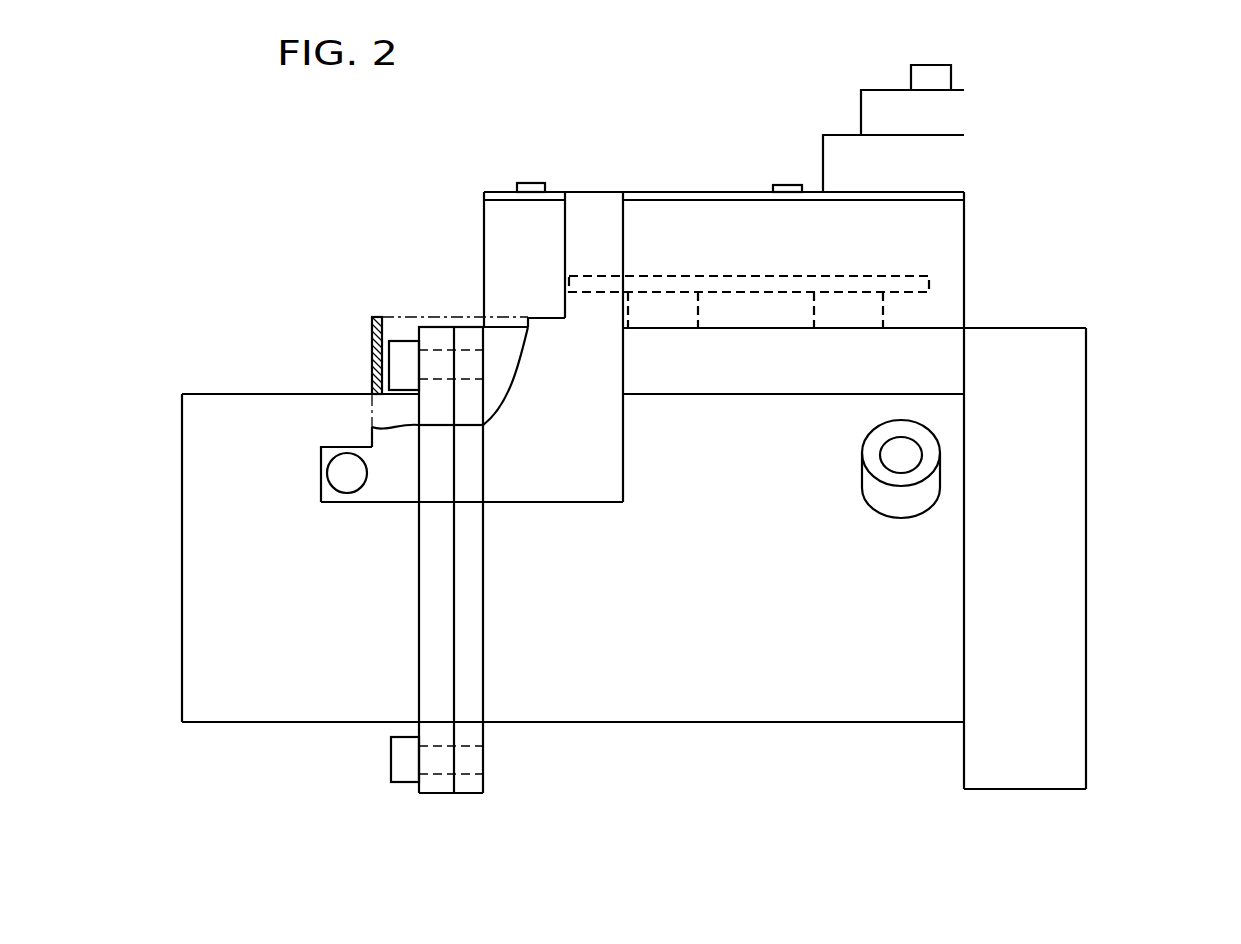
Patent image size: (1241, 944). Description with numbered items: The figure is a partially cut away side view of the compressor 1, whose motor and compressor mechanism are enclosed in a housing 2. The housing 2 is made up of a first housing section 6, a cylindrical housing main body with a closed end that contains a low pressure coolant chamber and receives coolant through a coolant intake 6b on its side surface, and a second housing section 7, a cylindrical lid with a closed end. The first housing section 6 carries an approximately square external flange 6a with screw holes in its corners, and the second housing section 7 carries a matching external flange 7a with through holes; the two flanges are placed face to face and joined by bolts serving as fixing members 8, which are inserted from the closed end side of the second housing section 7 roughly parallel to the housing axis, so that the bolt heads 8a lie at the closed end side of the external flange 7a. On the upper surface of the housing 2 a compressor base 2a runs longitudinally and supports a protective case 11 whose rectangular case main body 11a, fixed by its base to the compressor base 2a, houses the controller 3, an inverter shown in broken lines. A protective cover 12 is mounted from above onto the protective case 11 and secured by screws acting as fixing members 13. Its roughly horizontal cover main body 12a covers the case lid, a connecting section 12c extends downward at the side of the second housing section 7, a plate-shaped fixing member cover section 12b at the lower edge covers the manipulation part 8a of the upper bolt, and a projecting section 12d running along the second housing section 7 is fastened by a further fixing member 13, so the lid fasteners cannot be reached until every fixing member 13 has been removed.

The compressor 1 is at (1172, 94).
The housing 2 is at (786, 816).
The compressor base 2a is at (833, 372).
The controller 3 is at (803, 275).
The first housing section 6 is at (683, 700).
The external flange 6a is at (484, 785).
The coolant intake 6b is at (898, 497).
The second housing section 7 is at (265, 705).
The external flange 7a is at (437, 788).
The fixing member 8 is at (444, 266).
The head 8a is at (397, 340).
The protective case 11 is at (1006, 205).
The case main body 11a is at (964, 290).
The protective cover 12 is at (761, 89).
The cover main body 12a is at (688, 190).
The fixing member cover section 12b is at (372, 350).
The connecting section 12c is at (605, 472).
The projecting section 12d is at (321, 493).
The fixing member 13 is at (533, 183).